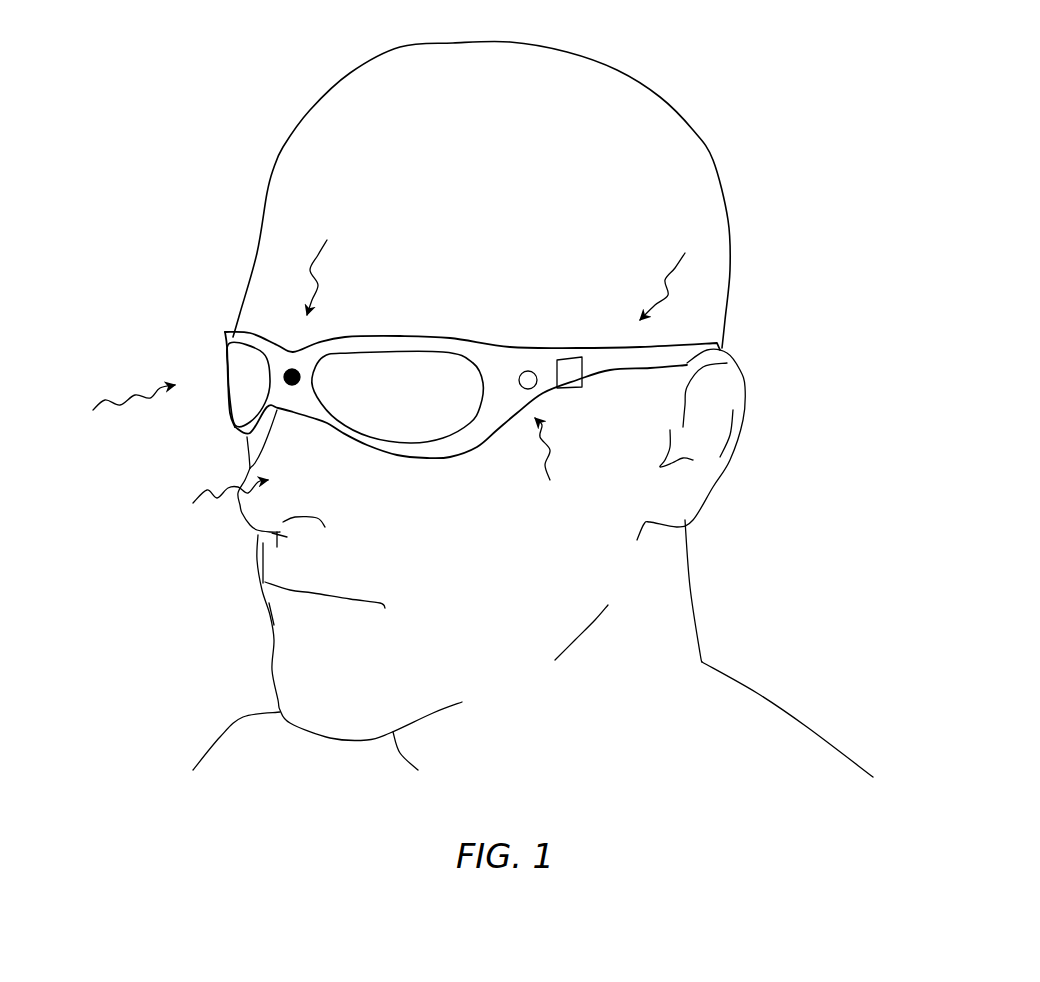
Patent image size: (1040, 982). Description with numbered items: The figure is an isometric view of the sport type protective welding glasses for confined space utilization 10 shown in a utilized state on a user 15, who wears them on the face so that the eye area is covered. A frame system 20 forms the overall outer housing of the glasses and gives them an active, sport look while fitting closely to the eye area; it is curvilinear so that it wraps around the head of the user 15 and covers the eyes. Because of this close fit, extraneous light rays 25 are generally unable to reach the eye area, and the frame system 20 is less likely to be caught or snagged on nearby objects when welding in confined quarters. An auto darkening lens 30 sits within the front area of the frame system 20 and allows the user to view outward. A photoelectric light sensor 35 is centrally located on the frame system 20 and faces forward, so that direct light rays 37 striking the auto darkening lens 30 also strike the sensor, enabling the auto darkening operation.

The sport type protective welding glasses for confined space utilization 10 is at (950, 185).
The user 15 is at (660, 185).
The frame system 20 is at (447, 450).
The extraneous light rays 25 is at (308, 278).
The auto darkening lens 30 is at (382, 378).
The photoelectric light sensor 35 is at (285, 385).
The direct light rays 37 is at (108, 397).